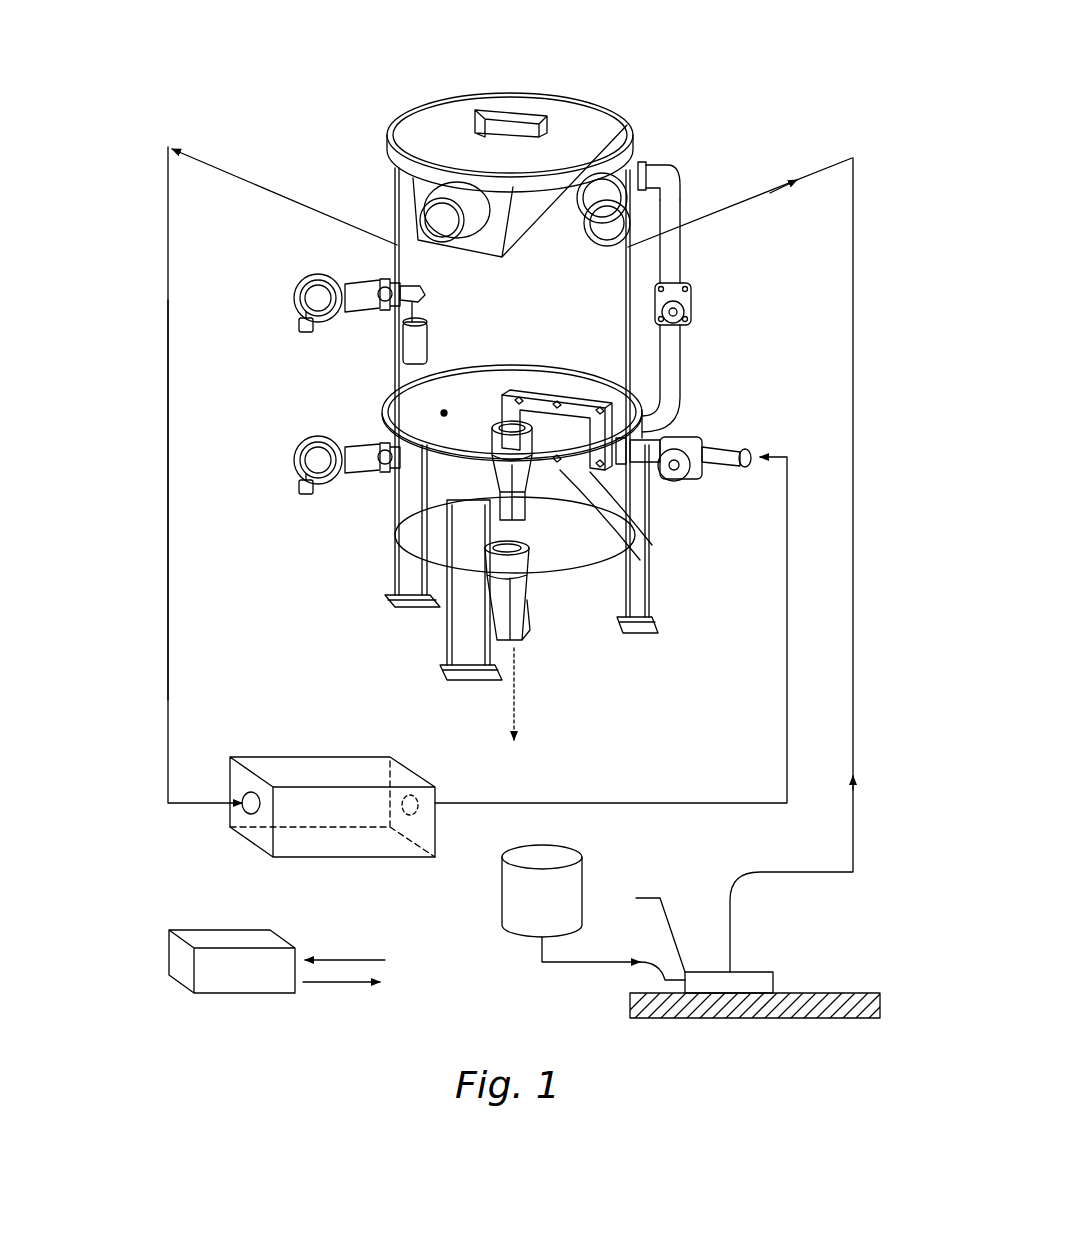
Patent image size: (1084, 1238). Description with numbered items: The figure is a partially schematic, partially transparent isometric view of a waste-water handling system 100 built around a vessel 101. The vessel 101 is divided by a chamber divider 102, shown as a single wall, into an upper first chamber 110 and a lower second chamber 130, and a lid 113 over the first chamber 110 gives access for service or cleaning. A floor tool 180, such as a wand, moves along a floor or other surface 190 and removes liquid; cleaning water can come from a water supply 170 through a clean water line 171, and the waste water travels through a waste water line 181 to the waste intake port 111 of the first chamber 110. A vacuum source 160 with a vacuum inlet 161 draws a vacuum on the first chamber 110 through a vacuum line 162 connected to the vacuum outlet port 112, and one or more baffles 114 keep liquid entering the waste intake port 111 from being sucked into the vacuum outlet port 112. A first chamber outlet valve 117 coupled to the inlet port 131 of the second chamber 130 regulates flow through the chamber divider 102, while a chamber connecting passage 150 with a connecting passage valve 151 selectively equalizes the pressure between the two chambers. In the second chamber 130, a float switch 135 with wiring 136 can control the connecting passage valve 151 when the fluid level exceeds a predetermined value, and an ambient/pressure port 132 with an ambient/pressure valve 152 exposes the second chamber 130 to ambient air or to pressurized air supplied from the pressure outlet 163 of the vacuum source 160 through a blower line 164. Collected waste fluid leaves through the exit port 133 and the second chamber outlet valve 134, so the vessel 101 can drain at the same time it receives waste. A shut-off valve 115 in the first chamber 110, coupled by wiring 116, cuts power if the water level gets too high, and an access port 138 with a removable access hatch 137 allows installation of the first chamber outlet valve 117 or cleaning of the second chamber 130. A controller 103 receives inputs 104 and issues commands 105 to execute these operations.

The system 100 is at (232, 70).
The vessel 101 is at (368, 137).
The chamber divider 102 is at (393, 411).
The controller 103 is at (232, 930).
The inputs 104 is at (345, 960).
The commands 105 is at (343, 982).
The first chamber 110 is at (403, 370).
The waste intake port 111 is at (655, 165).
The vacuum outlet port 112 is at (427, 202).
The lid 113 is at (538, 100).
The baffles 114 is at (627, 126).
The shut-off valve 115 is at (347, 265).
The wiring 116 is at (298, 302).
The first chamber outlet valve 117 is at (493, 500).
The second chamber 130 is at (578, 555).
The inlet port 131 is at (500, 478).
The ambient/pressure port 132 is at (656, 481).
The exit port 133 is at (580, 553).
The second chamber outlet valve 134 is at (526, 650).
The float switch 135 is at (360, 472).
The wiring 136 is at (298, 462).
The access hatch 137 is at (618, 558).
The access port 138 is at (595, 478).
The chamber connecting passage 150 is at (690, 348).
The connecting passage valve 151 is at (702, 292).
The ambient/pressure valve 152 is at (688, 434).
The vacuum source 160 is at (312, 767).
The vacuum inlet 161 is at (250, 810).
The vacuum line 162 is at (168, 592).
The pressure outlet 163 is at (423, 813).
The blower line 164 is at (620, 806).
The water supply 170 is at (503, 905).
The clean water line 171 is at (585, 960).
The floor tool 180 is at (758, 972).
The waste water line 181 is at (853, 470).
The surface 190 is at (842, 993).